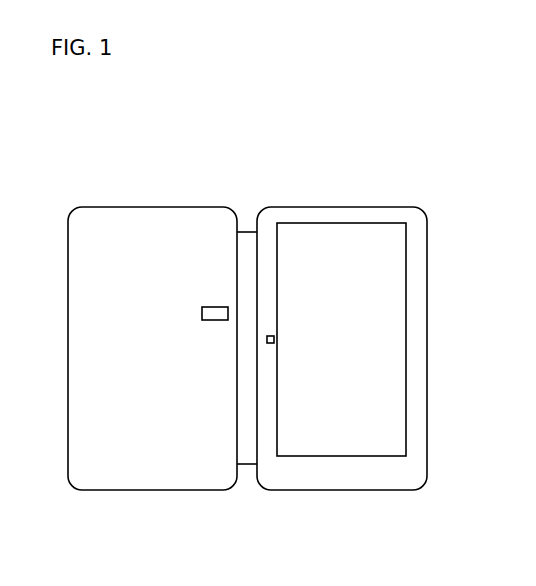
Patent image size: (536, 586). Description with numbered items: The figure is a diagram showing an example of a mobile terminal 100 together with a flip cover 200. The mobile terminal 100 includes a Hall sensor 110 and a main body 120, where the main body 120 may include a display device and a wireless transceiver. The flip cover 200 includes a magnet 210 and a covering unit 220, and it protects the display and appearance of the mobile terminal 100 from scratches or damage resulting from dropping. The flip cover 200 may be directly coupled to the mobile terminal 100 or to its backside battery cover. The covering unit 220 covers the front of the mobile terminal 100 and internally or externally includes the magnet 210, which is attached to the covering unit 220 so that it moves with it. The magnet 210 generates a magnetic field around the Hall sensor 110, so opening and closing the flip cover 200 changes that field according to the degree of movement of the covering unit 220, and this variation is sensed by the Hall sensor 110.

The mobile terminal 100 is at (335, 192).
The Hall sensor 110 is at (276, 341).
The main body 120 is at (343, 491).
The flip cover 200 is at (147, 192).
The magnet 210 is at (201, 315).
The covering unit 220 is at (155, 491).